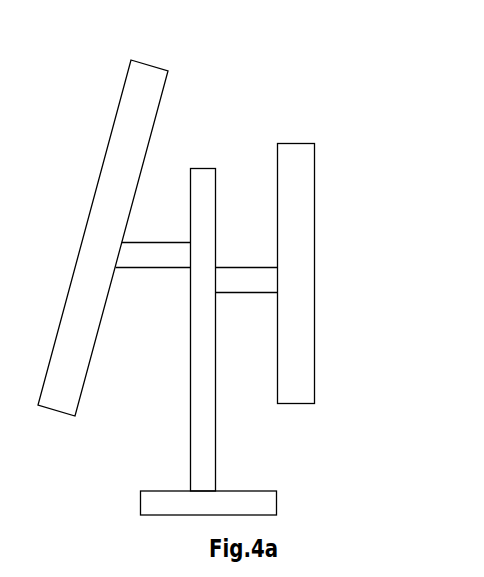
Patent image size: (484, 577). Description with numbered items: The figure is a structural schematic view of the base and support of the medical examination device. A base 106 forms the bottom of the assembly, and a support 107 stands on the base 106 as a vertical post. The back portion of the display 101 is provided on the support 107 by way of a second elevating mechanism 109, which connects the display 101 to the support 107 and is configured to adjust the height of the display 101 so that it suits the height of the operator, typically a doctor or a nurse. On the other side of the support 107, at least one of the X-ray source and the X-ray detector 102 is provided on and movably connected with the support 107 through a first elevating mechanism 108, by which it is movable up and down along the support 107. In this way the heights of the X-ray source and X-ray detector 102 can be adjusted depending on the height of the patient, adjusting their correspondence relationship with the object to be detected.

The display 101 is at (165, 83).
The X-ray source 102 is at (315, 211).
The base 106 is at (277, 504).
The support 107 is at (216, 193).
The first elevating mechanism 108 is at (235, 268).
The second elevating mechanism 109 is at (143, 242).